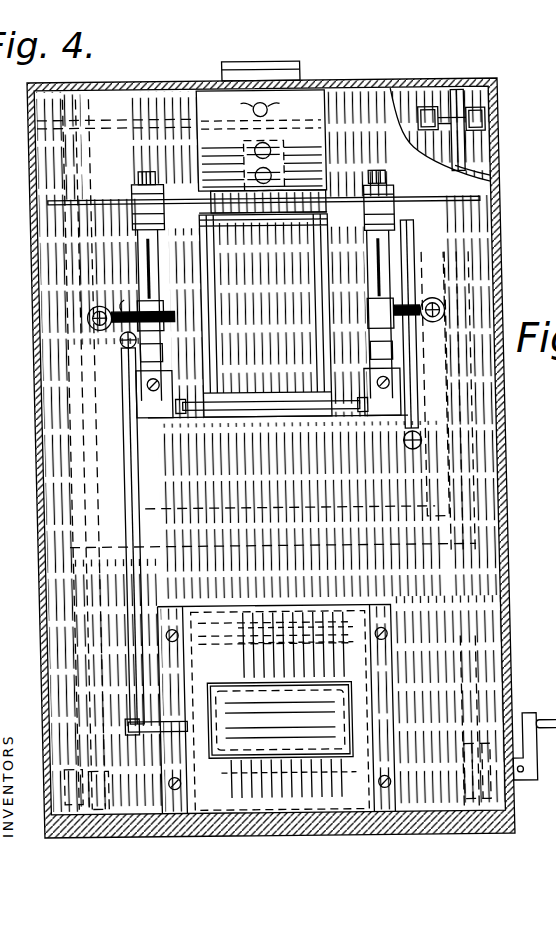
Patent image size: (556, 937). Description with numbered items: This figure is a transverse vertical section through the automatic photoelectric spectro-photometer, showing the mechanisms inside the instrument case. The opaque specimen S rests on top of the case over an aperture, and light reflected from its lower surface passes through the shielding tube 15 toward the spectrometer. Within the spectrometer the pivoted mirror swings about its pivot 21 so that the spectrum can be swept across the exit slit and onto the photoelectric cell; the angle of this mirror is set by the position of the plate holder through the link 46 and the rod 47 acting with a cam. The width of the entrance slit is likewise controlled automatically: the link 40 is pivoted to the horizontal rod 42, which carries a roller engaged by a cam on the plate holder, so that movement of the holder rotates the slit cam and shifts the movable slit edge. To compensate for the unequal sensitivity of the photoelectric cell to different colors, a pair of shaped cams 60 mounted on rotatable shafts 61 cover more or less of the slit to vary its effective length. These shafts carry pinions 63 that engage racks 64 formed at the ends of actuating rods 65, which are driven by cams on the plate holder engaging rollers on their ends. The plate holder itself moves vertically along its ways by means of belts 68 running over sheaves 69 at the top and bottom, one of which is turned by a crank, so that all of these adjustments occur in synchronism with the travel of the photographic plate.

The shielding tube 15 is at (270, 156).
The pivot 21 is at (112, 728).
The link 40 is at (402, 389).
The horizontal rod 42 is at (395, 446).
The link 46 is at (130, 572).
The rod 47 is at (113, 341).
The cams 60 is at (122, 201).
The rotatable shafts 61 is at (139, 264).
The pinions 63 is at (169, 318).
The racks 64 is at (119, 301).
The actuating rods 65 is at (82, 319).
The belts 68 is at (453, 170).
The sheaves 69 is at (457, 94).
The opaque specimen S is at (262, 64).